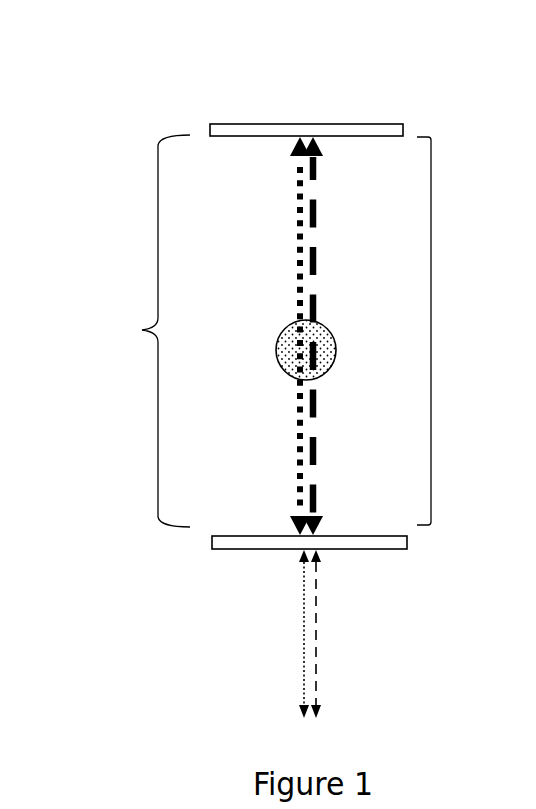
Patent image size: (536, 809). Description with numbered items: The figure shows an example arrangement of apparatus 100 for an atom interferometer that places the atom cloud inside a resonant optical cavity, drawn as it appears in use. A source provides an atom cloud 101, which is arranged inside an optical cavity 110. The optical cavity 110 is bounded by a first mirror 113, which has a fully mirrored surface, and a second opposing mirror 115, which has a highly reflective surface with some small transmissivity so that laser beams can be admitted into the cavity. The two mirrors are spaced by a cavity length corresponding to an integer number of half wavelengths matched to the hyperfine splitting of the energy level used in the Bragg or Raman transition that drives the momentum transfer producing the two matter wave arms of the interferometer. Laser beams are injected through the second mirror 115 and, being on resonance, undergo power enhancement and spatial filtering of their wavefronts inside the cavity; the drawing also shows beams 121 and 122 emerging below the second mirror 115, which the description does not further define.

The apparatus 100 is at (84, 71).
The atom cloud 101 is at (329, 372).
The optical cavity 110 is at (142, 330).
The first mirror 113 is at (403, 131).
The second mirror 115 is at (383, 551).
The first output beam 121 is at (303, 625).
The second output beam 122 is at (317, 622).